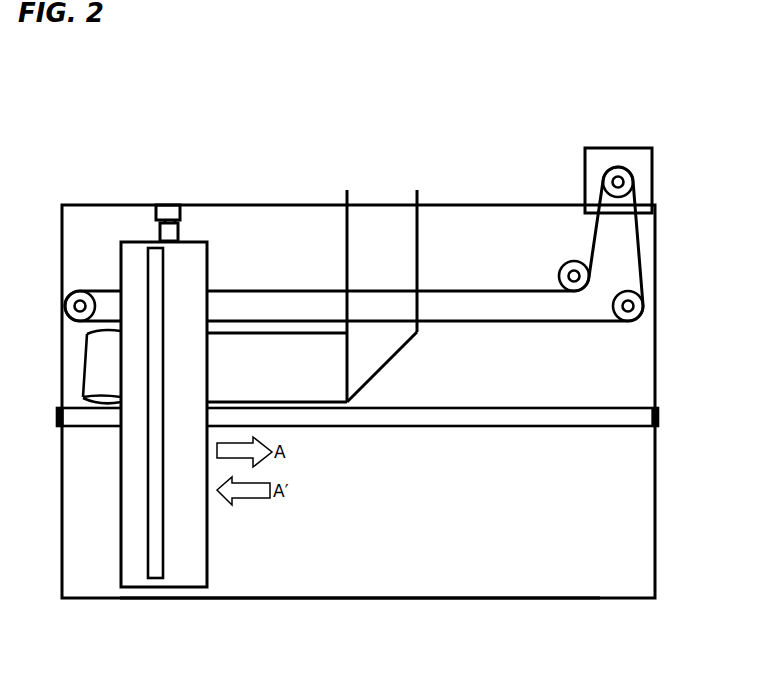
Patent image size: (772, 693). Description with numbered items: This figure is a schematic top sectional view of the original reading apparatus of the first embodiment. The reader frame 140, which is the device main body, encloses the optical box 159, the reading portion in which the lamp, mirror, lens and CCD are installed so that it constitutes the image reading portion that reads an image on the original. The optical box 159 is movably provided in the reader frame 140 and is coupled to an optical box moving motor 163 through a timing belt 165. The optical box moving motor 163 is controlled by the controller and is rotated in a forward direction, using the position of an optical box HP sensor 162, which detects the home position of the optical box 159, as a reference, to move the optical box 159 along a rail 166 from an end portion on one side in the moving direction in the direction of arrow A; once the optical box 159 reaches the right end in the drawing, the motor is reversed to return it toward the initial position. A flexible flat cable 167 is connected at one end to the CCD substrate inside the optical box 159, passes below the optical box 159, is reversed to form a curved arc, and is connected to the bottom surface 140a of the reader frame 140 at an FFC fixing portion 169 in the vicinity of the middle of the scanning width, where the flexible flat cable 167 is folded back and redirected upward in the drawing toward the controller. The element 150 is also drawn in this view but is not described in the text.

The reader frame 140 is at (463, 205).
The bottom surface 140a is at (397, 550).
The guide member 150 is at (358, 166).
The optical box 159 is at (197, 253).
The optical box HP sensor 162 is at (170, 208).
The optical box moving motor 163 is at (605, 158).
The timing belt 165 is at (642, 258).
The rail 166 is at (553, 420).
The flexible flat cable 167 is at (312, 372).
The FFC fixing portion 169 is at (388, 365).